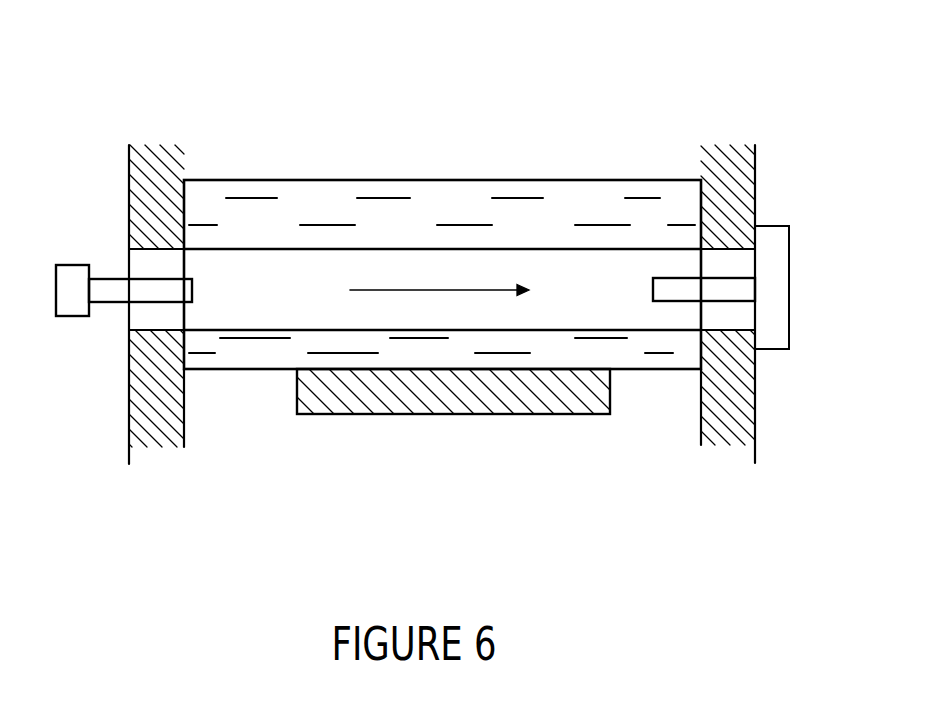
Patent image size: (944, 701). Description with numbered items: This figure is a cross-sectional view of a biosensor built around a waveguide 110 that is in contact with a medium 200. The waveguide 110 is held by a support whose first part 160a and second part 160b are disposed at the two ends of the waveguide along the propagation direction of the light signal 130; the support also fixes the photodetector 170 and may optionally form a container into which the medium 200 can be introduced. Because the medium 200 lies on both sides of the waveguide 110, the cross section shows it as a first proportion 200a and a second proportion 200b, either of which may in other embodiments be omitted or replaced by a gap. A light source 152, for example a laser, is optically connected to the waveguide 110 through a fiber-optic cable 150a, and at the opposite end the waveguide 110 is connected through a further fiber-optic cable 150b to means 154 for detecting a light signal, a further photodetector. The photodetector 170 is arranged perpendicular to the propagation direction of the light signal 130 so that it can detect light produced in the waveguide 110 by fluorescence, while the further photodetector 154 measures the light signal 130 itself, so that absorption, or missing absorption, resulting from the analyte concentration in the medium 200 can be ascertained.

The waveguide 110 is at (558, 285).
The light signal propagation direction 130 is at (439, 280).
The fiber-optic cable 150a is at (113, 287).
The further fiber-optic cable 150b is at (740, 290).
The light source 152 is at (71, 318).
The means for detecting a light signal 154 is at (773, 340).
The first part of the support 160a is at (155, 427).
The second part of the support 160b is at (727, 427).
The photodetector 170 is at (463, 398).
The medium 200 is at (442, 197).
The first proportion of the medium 200a is at (296, 358).
The second proportion of the medium 200b is at (418, 230).